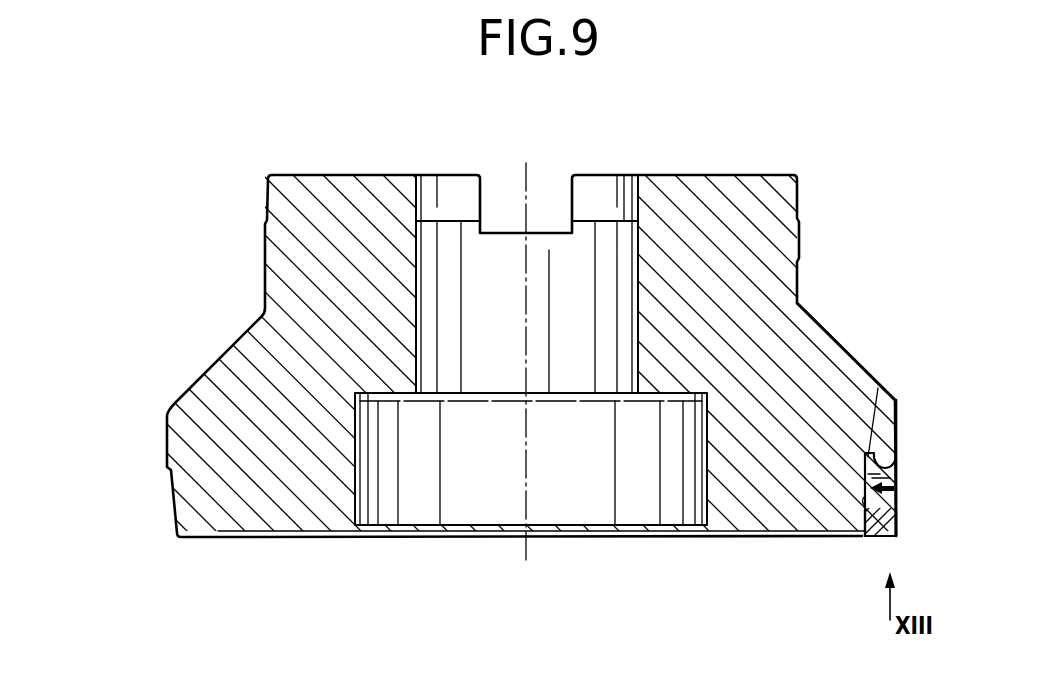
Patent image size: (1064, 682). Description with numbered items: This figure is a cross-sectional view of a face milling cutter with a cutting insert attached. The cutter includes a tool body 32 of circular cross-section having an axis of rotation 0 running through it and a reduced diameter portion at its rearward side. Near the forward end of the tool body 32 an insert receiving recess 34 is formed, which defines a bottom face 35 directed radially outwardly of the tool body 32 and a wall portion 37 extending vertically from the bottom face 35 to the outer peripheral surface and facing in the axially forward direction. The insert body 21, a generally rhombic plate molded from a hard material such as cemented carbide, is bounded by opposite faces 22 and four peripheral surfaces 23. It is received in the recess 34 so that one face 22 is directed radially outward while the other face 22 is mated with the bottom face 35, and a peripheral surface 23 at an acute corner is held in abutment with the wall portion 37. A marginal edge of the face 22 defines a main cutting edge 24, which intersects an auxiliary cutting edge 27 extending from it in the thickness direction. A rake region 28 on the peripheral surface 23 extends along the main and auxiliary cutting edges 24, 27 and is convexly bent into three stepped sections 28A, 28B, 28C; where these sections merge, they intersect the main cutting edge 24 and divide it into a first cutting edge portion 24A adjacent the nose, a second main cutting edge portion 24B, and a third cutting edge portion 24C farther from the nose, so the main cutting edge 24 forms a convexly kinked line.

The axis of rotation 0 is at (524, 364).
The insert body 21 is at (902, 479).
The front and rear faces 22 is at (900, 466).
The peripheral surfaces 23 is at (897, 428).
The main cutting edge 24 is at (977, 534).
The first cutting edge portion 24A is at (894, 534).
The second main cutting edge portion 24B is at (897, 517).
The third cutting edge portion 24C is at (898, 497).
The auxiliary cutting edge 27 is at (893, 540).
The rake region 28 is at (798, 600).
The rake region section 28A is at (860, 574).
The rake region section 28B is at (865, 538).
The rake region section 28C is at (855, 538).
The tool body 32 is at (782, 286).
The insert receiving recess 34 is at (898, 486).
The bottom face 35 is at (862, 510).
The wall portion 37 is at (878, 390).